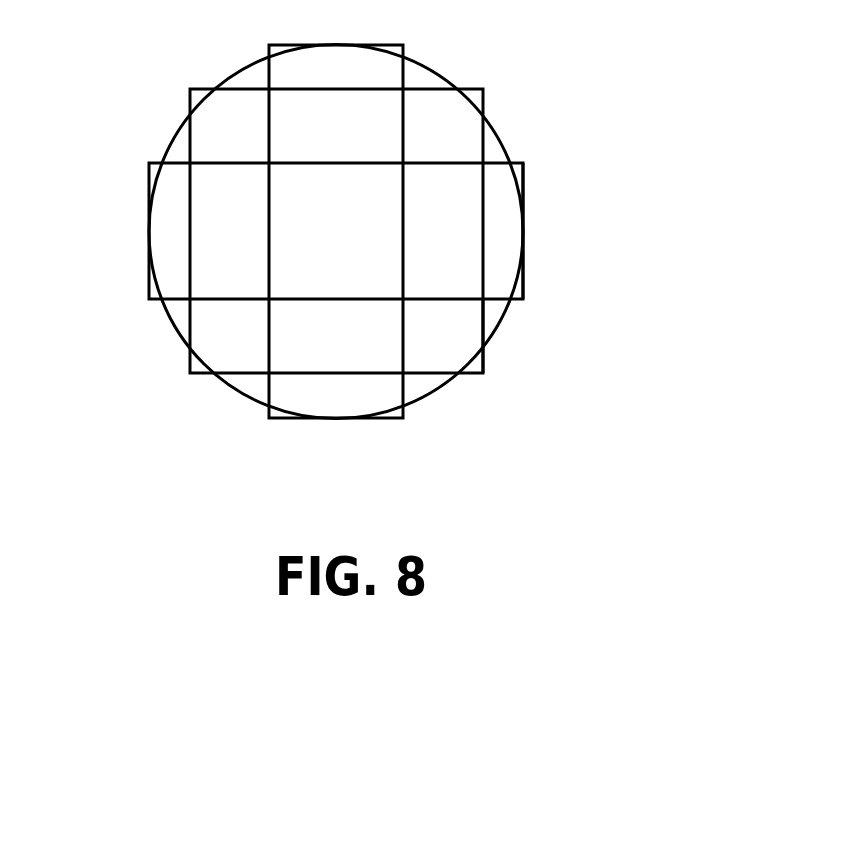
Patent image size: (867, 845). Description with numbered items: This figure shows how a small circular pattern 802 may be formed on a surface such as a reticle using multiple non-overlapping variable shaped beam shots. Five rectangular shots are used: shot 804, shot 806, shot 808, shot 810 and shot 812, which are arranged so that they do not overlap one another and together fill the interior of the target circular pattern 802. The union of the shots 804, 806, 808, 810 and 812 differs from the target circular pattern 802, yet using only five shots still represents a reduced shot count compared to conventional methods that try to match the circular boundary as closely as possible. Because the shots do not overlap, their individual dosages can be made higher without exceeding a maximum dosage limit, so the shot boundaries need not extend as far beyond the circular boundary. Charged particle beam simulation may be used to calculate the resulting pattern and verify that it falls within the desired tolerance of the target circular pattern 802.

The circular pattern 802 is at (430, 72).
The shot 804 is at (149, 290).
The shot 806 is at (190, 367).
The shot 808 is at (405, 390).
The shot 810 is at (485, 362).
The shot 812 is at (523, 287).